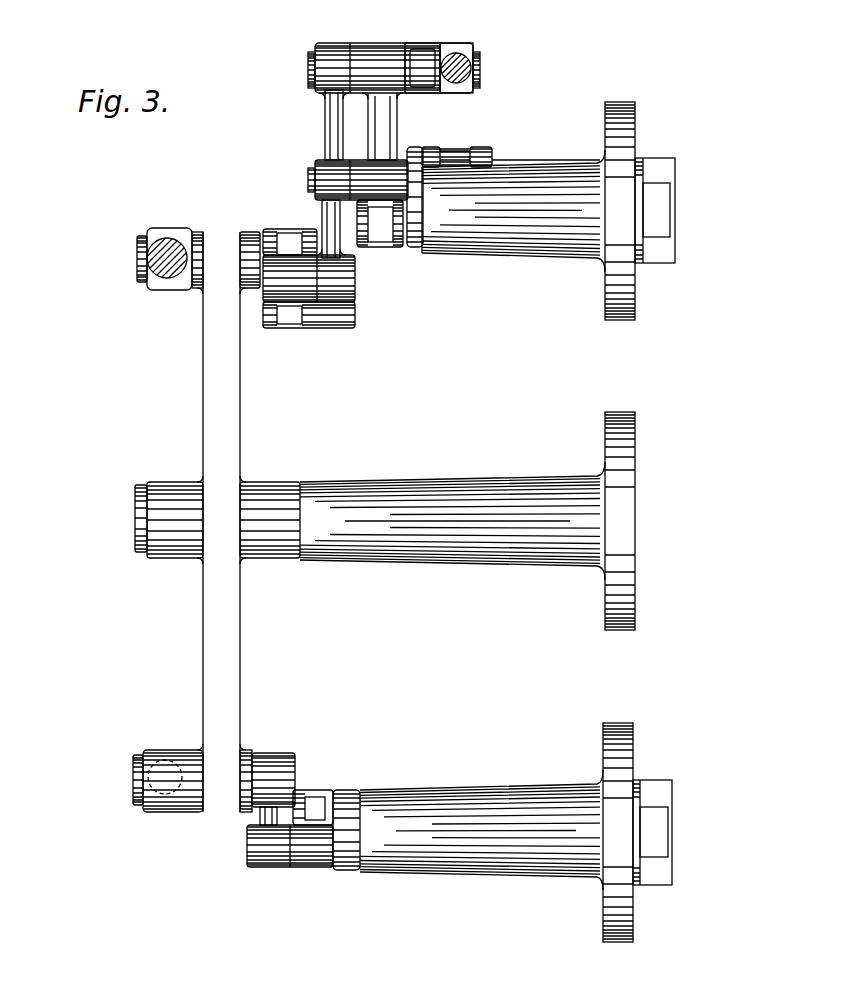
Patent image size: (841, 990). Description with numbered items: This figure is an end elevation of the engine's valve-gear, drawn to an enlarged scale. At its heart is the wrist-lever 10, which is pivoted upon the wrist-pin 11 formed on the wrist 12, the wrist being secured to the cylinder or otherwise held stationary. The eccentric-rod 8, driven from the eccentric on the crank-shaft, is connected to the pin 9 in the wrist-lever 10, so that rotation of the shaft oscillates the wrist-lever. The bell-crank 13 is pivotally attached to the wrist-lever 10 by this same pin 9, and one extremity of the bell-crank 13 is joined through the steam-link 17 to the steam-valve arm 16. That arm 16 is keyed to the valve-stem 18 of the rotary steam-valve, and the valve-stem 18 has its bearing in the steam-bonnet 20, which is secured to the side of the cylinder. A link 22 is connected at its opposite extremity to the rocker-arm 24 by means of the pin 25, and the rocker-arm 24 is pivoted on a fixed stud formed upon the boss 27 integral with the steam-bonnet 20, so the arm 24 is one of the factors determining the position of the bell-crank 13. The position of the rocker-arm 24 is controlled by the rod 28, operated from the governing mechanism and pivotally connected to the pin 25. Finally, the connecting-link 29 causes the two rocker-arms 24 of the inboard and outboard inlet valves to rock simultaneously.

The eccentric-rod 8 is at (155, 290).
The pin 9 is at (138, 257).
The wrist-lever 10 is at (215, 642).
The wrist-pin 11 is at (141, 526).
The wrist 12 is at (381, 559).
The bell-crank 13 is at (272, 224).
The steam-valve arm 16 is at (380, 223).
The steam-link 17 is at (328, 213).
The valve-stem 18 is at (668, 247).
The steam-bonnet 20 is at (493, 253).
The link 22 is at (326, 113).
The rocker-arm 24 is at (387, 120).
The pin 25 is at (308, 70).
The boss 27 is at (455, 160).
The rod 28 is at (481, 70).
The connecting-link 29 is at (423, 66).